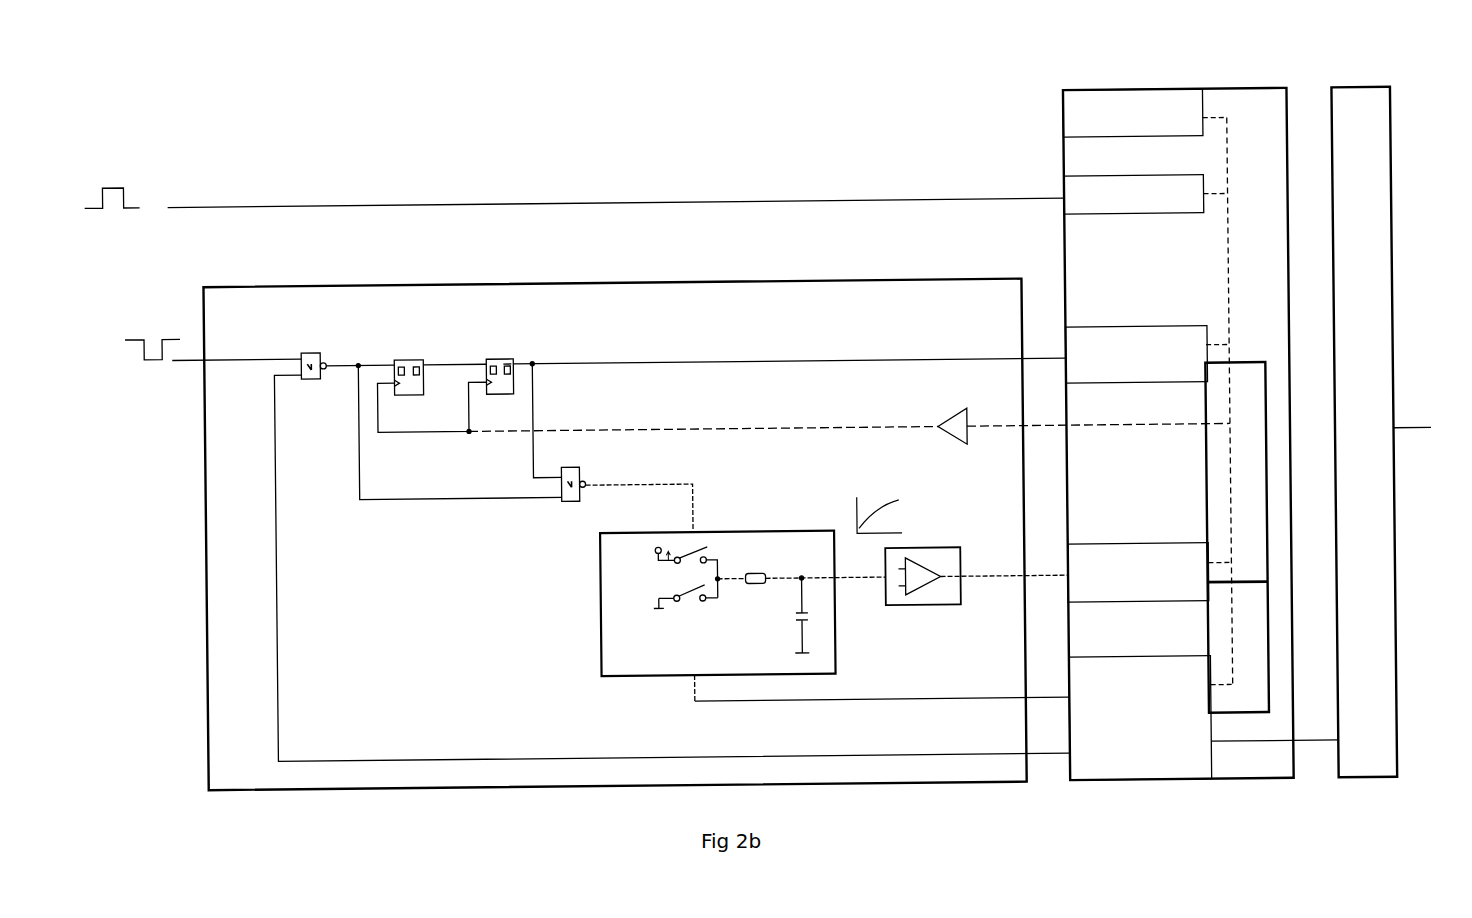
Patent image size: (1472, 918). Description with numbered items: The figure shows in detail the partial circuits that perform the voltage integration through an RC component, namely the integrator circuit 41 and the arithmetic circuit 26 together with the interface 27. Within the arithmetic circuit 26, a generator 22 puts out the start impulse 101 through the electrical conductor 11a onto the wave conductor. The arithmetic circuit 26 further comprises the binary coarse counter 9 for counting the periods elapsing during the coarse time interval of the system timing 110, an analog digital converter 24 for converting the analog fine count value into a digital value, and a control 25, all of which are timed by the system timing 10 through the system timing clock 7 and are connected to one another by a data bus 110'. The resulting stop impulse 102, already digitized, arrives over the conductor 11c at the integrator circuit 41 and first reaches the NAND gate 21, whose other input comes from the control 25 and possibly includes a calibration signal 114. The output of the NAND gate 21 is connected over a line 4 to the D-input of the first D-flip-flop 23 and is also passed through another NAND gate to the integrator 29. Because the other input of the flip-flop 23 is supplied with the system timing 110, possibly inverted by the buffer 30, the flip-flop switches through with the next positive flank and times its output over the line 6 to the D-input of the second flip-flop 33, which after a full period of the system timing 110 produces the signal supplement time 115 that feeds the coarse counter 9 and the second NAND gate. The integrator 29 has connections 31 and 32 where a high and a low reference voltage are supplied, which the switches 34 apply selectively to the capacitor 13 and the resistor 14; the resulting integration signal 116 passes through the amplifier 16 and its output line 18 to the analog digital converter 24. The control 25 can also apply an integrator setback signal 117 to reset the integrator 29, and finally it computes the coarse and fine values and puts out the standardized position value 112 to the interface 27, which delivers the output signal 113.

The start impulse 101 is at (114, 184).
The conductor 11a is at (245, 202).
The stop impulse 102 is at (153, 325).
The conductor 11c is at (192, 357).
The integrator circuit 41 is at (710, 282).
The NAND gate 21 is at (319, 348).
The connection line 4 is at (366, 358).
The first D-flip-flop 23 is at (411, 355).
The connection line 6 is at (451, 360).
The second flip-flop 33 is at (504, 354).
The signal supplement time 115 is at (561, 361).
The system timing 10 is at (633, 483).
The system timing 110 is at (849, 403).
The buffer 30 is at (950, 413).
The integrator 29 is at (713, 530).
The connection 32 is at (649, 551).
The connection 31 is at (649, 598).
The switches 34 is at (696, 613).
The capacitor 13 is at (792, 611).
The resistor 14 is at (789, 578).
The amplifier 16 is at (927, 550).
The output line 18 is at (974, 580).
The integration signal 116 is at (851, 582).
The integrator setback signal 117 is at (947, 701).
The calibration signal 114 is at (947, 758).
The arithmetic circuit 26 is at (1284, 95).
The system timing clock 7 is at (1133, 113).
The generator 22 is at (1134, 194).
The coarse counter 9 is at (1136, 354).
The analog digital converter 24 is at (1138, 572).
The control 25 is at (1140, 718).
The internal bus 110' is at (1241, 374).
The interface 27 is at (1382, 94).
The standardized position value 112 is at (1330, 746).
The output signal 113 is at (1410, 432).